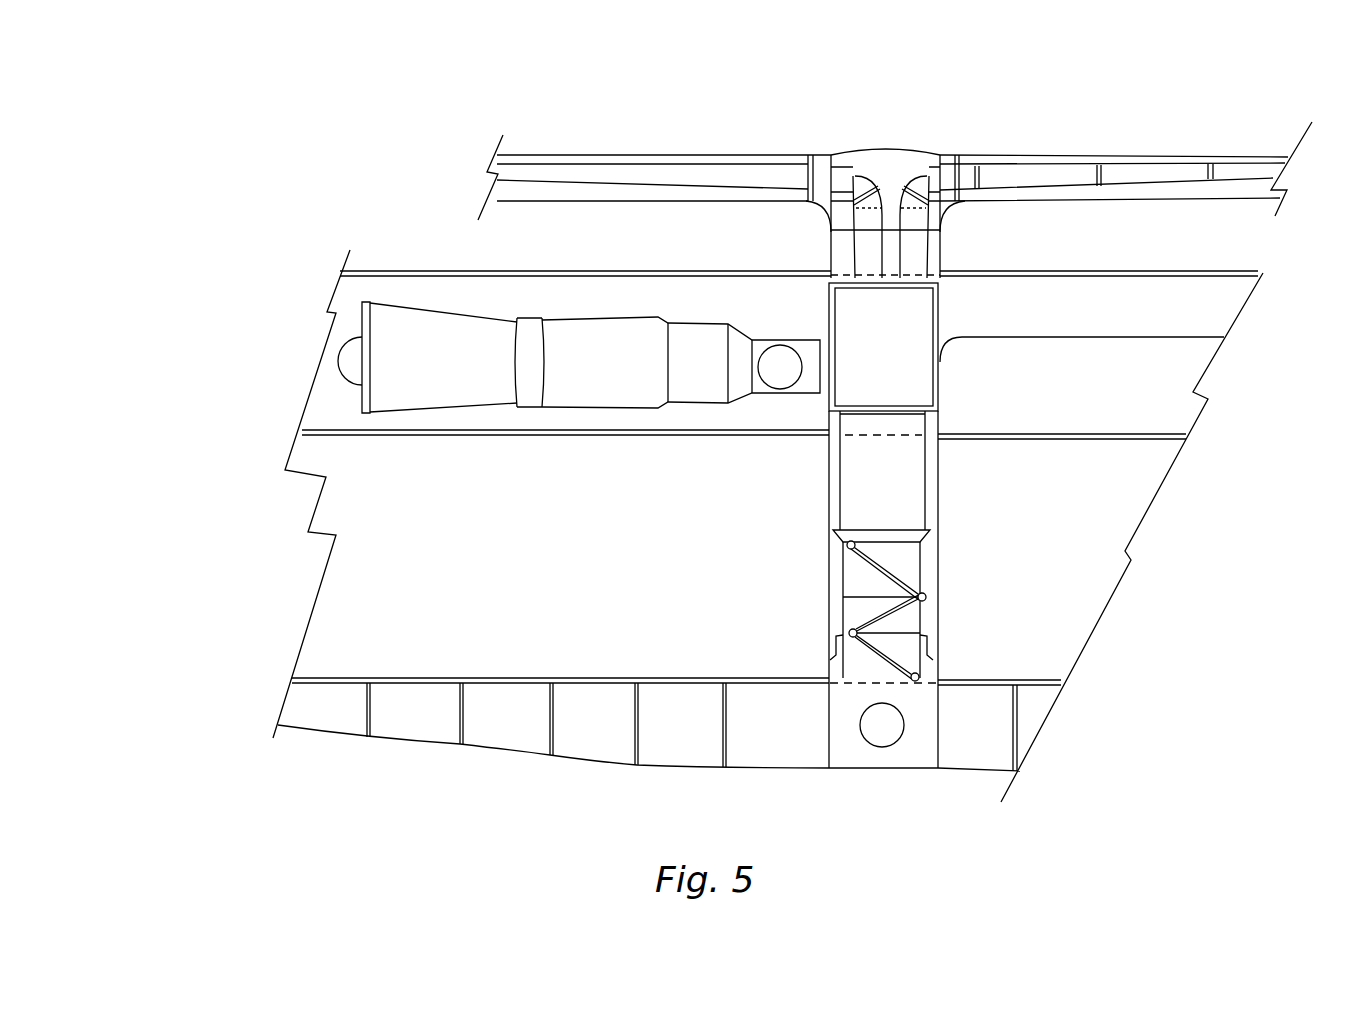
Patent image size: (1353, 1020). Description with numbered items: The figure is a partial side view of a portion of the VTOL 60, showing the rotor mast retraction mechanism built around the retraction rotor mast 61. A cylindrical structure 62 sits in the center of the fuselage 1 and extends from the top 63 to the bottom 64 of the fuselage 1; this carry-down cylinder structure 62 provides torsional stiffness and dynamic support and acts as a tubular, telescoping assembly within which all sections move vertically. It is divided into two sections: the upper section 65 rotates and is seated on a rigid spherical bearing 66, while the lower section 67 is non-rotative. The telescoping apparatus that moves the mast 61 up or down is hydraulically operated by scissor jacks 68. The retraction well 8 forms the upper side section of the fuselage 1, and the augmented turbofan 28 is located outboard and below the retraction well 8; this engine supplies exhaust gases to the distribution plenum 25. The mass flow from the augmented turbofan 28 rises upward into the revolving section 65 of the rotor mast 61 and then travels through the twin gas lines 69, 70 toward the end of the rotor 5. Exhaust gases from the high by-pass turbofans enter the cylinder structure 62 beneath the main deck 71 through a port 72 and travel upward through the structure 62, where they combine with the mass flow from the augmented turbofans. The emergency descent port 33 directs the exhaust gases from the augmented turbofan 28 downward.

The fuselage 1 is at (298, 374).
The rotor 5 is at (1073, 153).
The retraction well 8 is at (612, 313).
The distribution plenum 25 is at (852, 330).
The augmented turbofan 28 is at (620, 380).
The emergency descent port 33 is at (792, 382).
The VTOL 60 is at (305, 166).
The retraction rotor mast 61 is at (932, 255).
The cylindrical structure 62 is at (858, 495).
The top of the fuselage 63 is at (1047, 272).
The bottom of the fuselage 64 is at (893, 772).
The upper section 65 is at (845, 257).
The rigid spherical bearing 66 is at (830, 278).
The lower section 67 is at (905, 390).
The scissor jacks 68 is at (865, 578).
The gas line 69 is at (853, 180).
The gas line 70 is at (917, 178).
The main deck 71 is at (733, 678).
The port 72 is at (877, 723).